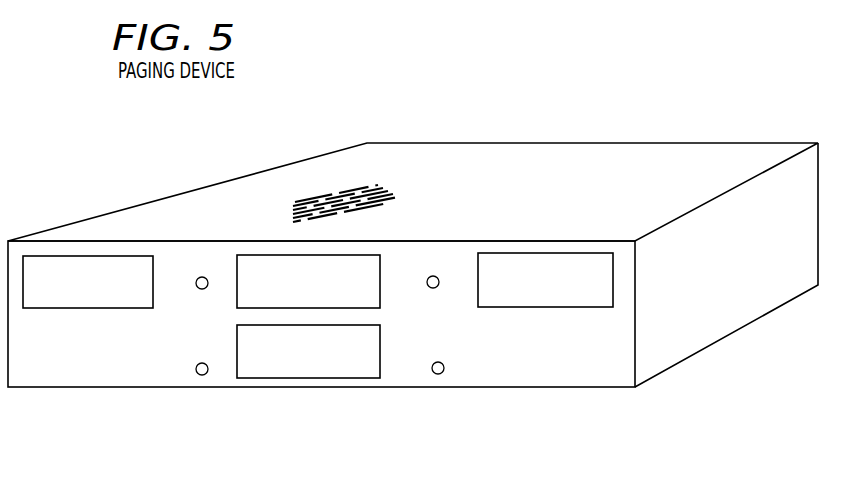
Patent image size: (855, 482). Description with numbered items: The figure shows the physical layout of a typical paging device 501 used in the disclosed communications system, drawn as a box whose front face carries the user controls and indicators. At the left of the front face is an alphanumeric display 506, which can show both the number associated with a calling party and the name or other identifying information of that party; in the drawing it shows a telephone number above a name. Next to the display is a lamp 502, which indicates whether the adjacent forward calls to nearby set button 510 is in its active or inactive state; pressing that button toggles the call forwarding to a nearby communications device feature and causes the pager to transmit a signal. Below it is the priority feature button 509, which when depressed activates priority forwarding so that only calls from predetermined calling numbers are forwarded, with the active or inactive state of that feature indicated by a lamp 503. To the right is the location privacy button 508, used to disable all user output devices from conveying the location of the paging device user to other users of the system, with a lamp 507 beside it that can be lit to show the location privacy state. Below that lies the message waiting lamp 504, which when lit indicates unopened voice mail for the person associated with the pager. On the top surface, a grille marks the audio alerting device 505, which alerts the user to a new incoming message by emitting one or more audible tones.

The paging device 501 is at (650, 343).
The lamp 502 is at (197, 303).
The lamp 503 is at (197, 372).
The message waiting lamp 504 is at (452, 394).
The audio alerting device 505 is at (365, 182).
The alphanumeric display 506 is at (104, 258).
The location privacy lamp 507 is at (437, 303).
The location privacy button 508 is at (573, 254).
The priority feature button 509 is at (327, 381).
The forward calls to nearby set button 510 is at (278, 255).